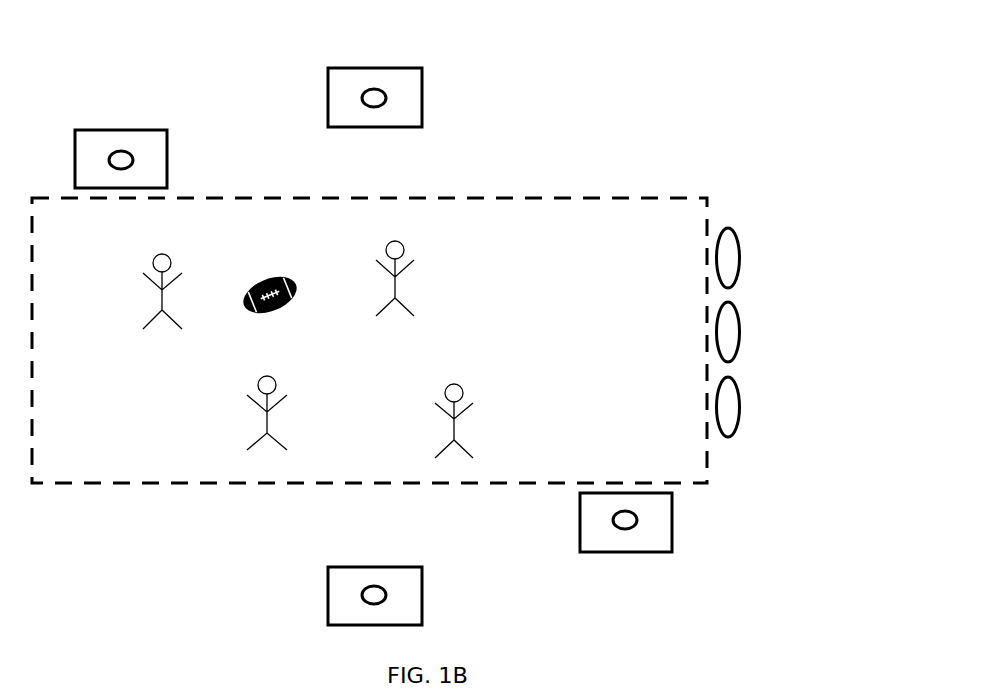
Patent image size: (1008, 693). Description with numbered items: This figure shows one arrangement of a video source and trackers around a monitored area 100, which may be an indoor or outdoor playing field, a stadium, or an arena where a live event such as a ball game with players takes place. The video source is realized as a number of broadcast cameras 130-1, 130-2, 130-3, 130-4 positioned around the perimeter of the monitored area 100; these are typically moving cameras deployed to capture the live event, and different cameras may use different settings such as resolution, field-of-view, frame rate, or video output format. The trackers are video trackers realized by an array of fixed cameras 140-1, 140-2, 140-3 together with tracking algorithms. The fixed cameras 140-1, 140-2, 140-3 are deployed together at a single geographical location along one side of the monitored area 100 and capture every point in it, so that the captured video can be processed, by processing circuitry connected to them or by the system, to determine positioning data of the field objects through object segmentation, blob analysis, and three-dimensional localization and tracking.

The monitored area 100 is at (506, 194).
The broadcast camera 130-1 is at (163, 168).
The broadcast camera 130-2 is at (422, 108).
The broadcast camera 130-3 is at (422, 605).
The broadcast camera 130-4 is at (617, 552).
The fixed camera 140-1 is at (741, 259).
The fixed camera 140-2 is at (741, 333).
The fixed camera 140-3 is at (741, 407).